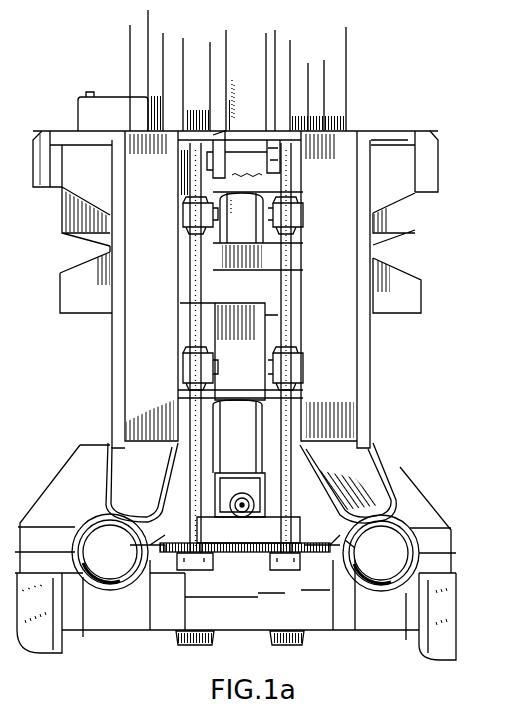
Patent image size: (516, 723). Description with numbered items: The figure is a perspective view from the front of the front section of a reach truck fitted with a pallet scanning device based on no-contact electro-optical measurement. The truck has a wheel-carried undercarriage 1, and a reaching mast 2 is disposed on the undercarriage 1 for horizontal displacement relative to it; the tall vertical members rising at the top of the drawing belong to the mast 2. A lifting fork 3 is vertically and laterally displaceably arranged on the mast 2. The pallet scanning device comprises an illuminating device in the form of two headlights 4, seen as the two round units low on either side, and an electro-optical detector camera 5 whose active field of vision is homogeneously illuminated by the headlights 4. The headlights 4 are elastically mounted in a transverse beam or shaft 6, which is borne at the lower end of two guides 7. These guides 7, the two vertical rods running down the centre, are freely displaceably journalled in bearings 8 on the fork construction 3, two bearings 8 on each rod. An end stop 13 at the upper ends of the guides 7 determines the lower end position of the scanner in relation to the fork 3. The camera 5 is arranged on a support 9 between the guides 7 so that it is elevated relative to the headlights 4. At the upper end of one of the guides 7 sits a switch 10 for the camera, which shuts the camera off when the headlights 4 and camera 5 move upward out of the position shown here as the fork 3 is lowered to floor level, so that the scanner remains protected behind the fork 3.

The undercarriage 1 is at (406, 474).
The reaching mast 2 is at (345, 82).
The lifting fork 3 is at (344, 331).
The headlight 4 is at (110, 570).
The electro-optical detector camera 5 is at (236, 473).
The transverse beam 6 is at (318, 545).
The guide 7 is at (196, 308).
The bearing 8 is at (183, 210).
The support 9 is at (238, 543).
The switch 10 is at (215, 134).
The end stop 13 is at (278, 134).